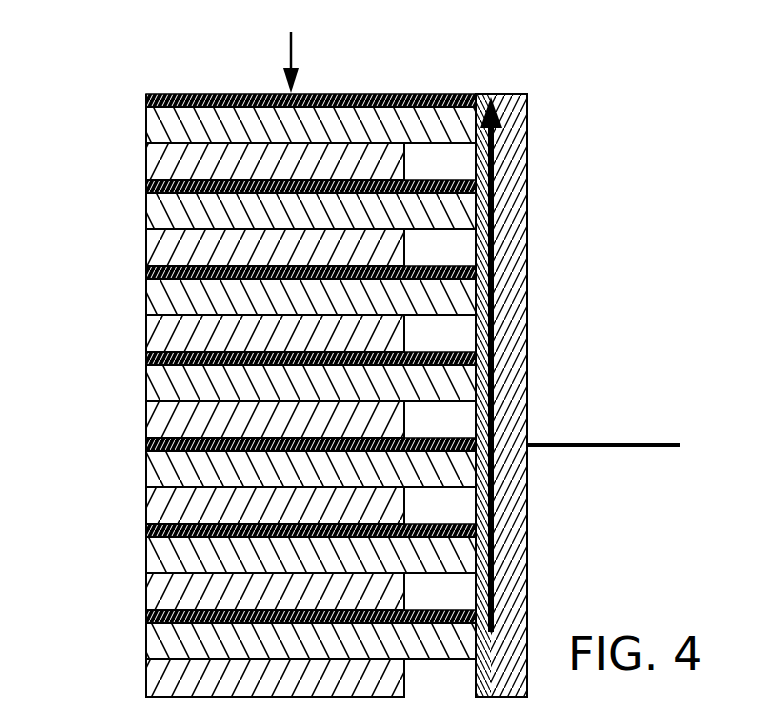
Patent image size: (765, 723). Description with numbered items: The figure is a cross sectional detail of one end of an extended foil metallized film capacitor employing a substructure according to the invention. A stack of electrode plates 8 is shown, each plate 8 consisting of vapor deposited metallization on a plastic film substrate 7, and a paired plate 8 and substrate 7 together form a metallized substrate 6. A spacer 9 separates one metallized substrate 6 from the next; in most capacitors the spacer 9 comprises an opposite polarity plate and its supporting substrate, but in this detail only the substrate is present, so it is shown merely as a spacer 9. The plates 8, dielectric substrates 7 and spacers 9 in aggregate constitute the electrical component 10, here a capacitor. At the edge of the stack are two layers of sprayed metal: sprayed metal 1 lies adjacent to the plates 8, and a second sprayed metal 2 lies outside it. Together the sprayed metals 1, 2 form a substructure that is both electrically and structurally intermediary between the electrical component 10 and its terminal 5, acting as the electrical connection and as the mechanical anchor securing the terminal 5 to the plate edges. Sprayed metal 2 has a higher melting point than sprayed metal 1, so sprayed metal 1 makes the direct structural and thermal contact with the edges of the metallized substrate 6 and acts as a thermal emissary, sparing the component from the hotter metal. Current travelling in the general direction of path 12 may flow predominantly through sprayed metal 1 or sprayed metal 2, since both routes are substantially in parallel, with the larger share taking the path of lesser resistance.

The sprayed metal 1 is at (479, 100).
The second sprayed metal 2 is at (527, 207).
The terminal 5 is at (620, 442).
The metallized substrate 6 is at (145, 105).
The plastic film substrate 7 is at (146, 136).
The electrode plate 8 is at (230, 95).
The spacer 9 is at (146, 158).
The electrical component 10 is at (291, 52).
The path 12 is at (503, 271).